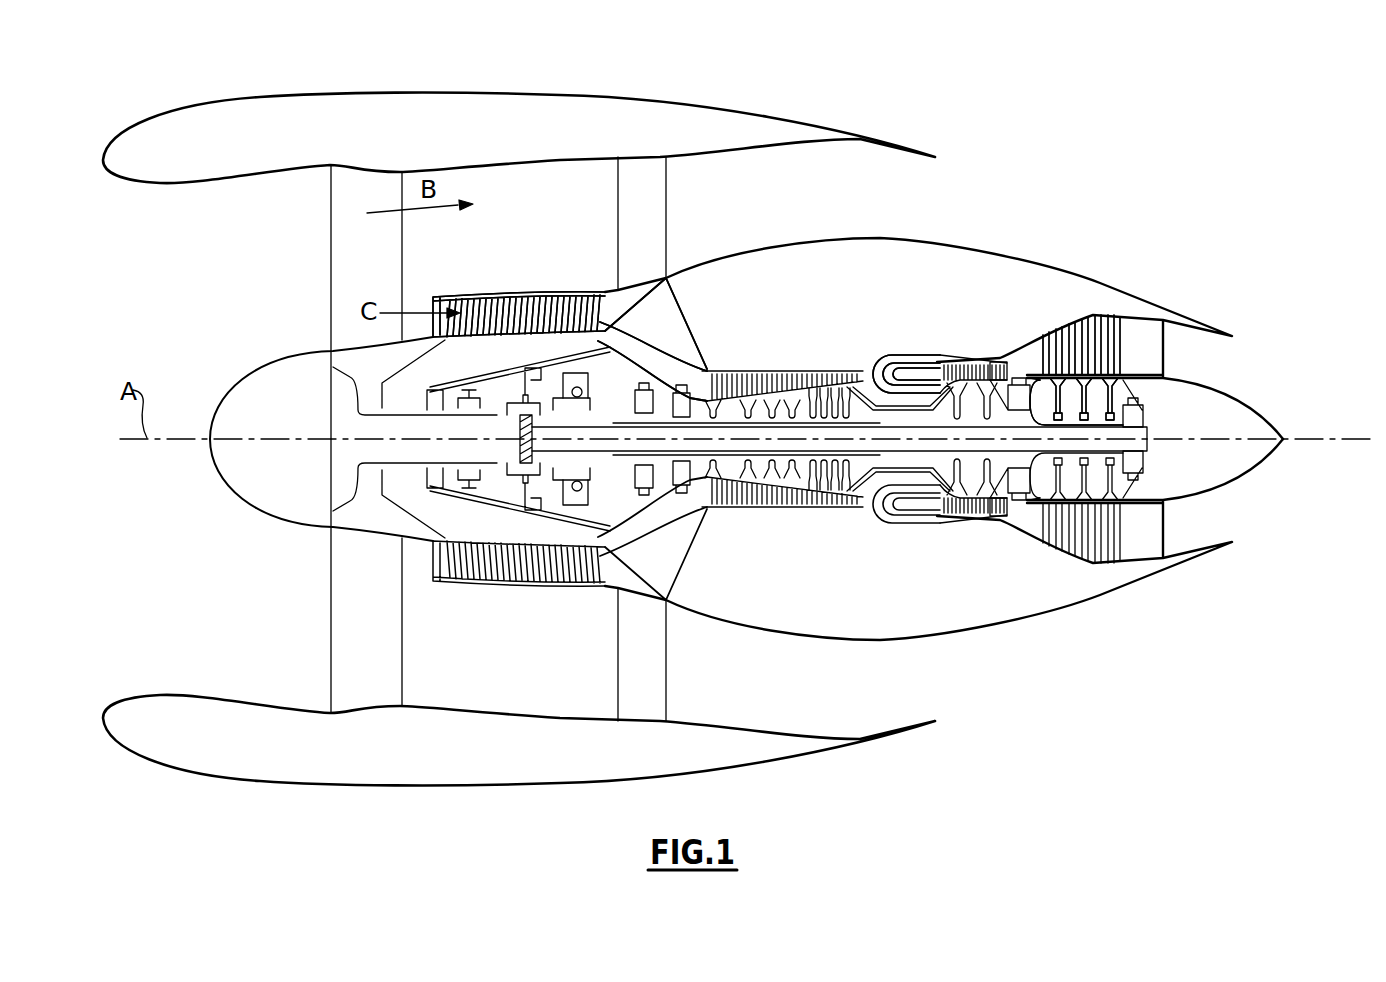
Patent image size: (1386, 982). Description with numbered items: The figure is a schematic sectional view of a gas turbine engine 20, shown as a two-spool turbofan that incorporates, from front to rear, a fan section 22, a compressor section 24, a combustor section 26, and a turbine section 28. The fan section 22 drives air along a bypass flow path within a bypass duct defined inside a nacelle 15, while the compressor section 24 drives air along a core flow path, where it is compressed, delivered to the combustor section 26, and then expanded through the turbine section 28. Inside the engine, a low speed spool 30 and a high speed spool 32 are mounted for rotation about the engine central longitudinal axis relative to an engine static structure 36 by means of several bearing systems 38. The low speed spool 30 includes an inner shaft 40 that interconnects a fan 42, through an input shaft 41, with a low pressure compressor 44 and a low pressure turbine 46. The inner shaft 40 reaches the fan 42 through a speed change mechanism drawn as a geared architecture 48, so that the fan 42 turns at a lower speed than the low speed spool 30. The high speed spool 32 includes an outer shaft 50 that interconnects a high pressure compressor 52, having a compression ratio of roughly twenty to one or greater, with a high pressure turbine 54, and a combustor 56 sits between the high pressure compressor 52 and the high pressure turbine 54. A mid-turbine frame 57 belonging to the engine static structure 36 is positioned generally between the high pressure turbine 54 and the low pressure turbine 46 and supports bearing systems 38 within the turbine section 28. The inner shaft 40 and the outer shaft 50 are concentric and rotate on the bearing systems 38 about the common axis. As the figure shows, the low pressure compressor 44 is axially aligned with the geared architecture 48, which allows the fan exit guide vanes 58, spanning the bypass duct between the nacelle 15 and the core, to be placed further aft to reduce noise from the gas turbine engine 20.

The nacelle 15 is at (413, 107).
The gas turbine engine 20 is at (777, 338).
The fan section 22 is at (299, 203).
The compressor section 24 is at (684, 305).
The combustor section 26 is at (923, 328).
The turbine section 28 is at (1032, 302).
The low speed spool 30 is at (847, 500).
The high speed spool 32 is at (863, 372).
The engine static structure 36 is at (705, 510).
The bearing systems 38 is at (645, 380).
The inner shaft 40 is at (596, 418).
The input shaft 41 is at (593, 450).
The fan 42 is at (381, 269).
The low pressure compressor 44 is at (503, 300).
The low pressure turbine 46 is at (1073, 330).
The geared architecture 48 is at (510, 426).
The outer shaft 50 is at (862, 360).
The high pressure compressor 52 is at (757, 372).
The high pressure turbine 54 is at (981, 360).
The combustor 56 is at (910, 365).
The mid-turbine frame 57 is at (1000, 360).
The fan exit guide vanes 58 is at (650, 202).